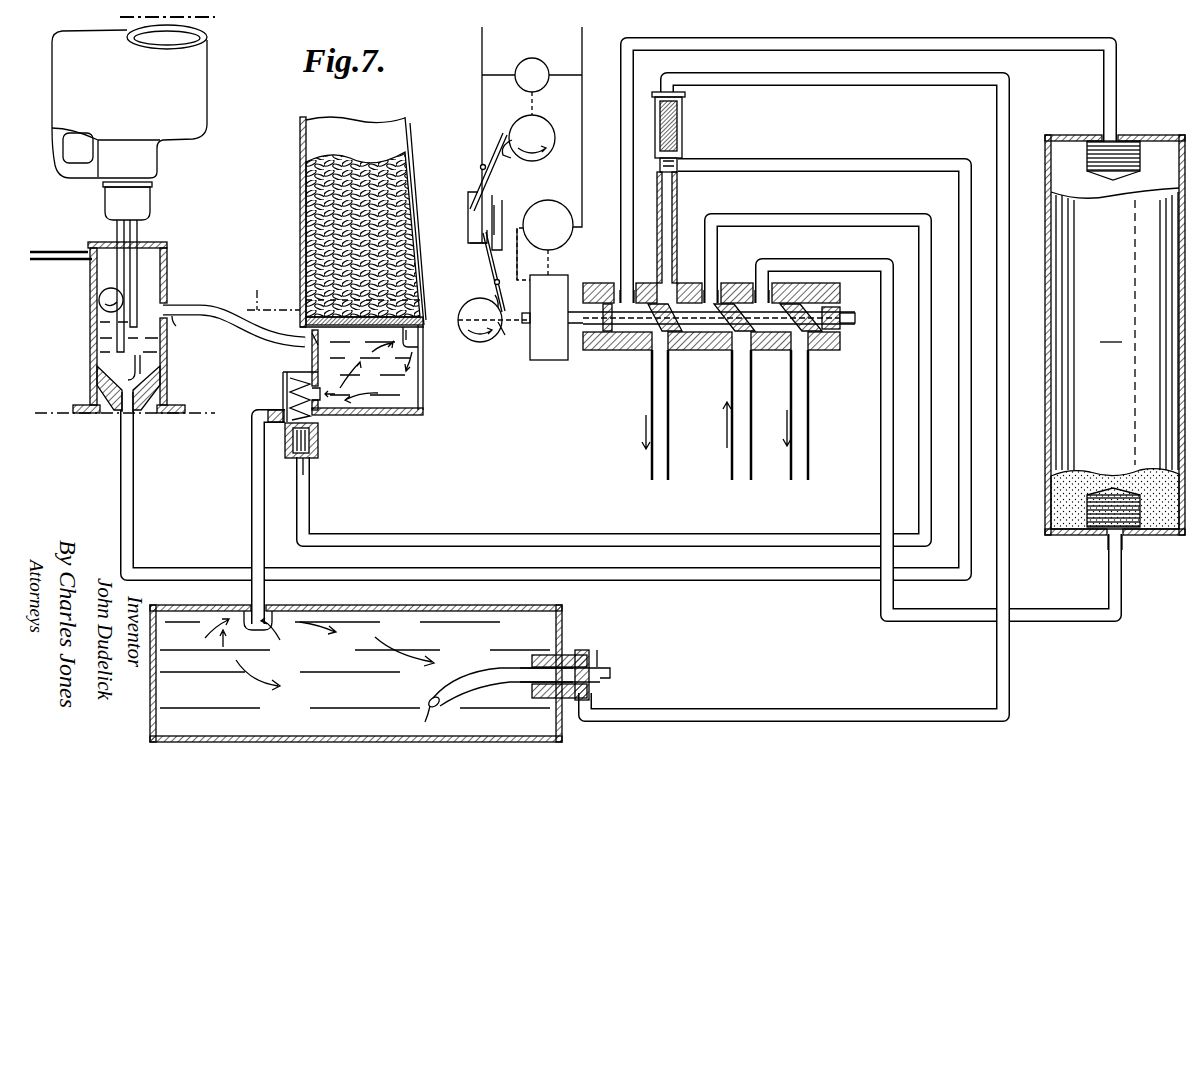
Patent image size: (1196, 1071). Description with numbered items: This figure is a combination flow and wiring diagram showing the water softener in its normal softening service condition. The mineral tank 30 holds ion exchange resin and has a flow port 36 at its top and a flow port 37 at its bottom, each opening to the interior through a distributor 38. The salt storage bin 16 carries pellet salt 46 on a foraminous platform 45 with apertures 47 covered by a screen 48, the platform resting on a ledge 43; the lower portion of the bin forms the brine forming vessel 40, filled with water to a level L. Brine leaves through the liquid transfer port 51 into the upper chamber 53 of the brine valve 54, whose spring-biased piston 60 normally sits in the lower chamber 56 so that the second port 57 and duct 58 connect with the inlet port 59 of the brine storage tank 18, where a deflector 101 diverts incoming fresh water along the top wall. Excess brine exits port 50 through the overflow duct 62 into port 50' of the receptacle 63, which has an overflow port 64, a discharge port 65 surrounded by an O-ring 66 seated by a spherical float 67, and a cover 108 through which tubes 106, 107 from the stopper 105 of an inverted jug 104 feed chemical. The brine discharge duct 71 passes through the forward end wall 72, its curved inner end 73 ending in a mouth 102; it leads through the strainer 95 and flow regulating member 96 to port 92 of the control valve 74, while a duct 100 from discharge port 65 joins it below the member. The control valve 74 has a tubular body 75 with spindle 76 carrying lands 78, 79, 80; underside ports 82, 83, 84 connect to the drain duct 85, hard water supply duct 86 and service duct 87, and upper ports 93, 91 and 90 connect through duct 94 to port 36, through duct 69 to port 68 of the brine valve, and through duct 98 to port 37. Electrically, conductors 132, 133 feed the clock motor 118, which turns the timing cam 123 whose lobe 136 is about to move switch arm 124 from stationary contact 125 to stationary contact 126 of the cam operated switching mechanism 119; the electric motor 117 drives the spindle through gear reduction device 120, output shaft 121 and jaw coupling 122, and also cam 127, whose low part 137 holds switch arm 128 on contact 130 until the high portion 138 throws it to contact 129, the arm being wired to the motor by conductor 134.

The jug 104 is at (192, 94).
The two-hole stopper 105 is at (140, 206).
The cover 108 is at (152, 240).
The tube 107 is at (138, 262).
The tube 106 is at (118, 272).
The overflow port 64 is at (88, 251).
The receptacle 63 is at (92, 286).
The spherical float 67 is at (102, 308).
The overflow duct 62 is at (192, 302).
The port 50' is at (188, 325).
The O-ring 66 is at (140, 362).
The discharge port 65 is at (120, 416).
The salt storage bin 16 is at (298, 148).
The salt 46 is at (356, 152).
The screen 48 is at (318, 297).
The ledge 43 is at (312, 323).
The level L is at (271, 290).
The brine forming vessel 40 is at (416, 392).
The foraminous platform 45 is at (410, 340).
The apertures 47 is at (412, 348).
The port 50 is at (298, 346).
The brine valve 54 is at (283, 378).
The upper chamber 53 is at (290, 388).
The second port 57 is at (270, 412).
The liquid transfer port 51 is at (318, 402).
The lower chamber 56 is at (310, 440).
The piston 60 is at (316, 453).
The port 68 is at (305, 473).
The duct 58 is at (252, 478).
The inlet port 59 is at (266, 600).
The deflector 101 is at (246, 612).
The brine storage tank 18 is at (320, 742).
The forward end wall 72 is at (565, 650).
The curved inner end 73 is at (468, 690).
The mouth 102 is at (430, 712).
The brine discharge duct 71 is at (797, 708).
The duct 69 is at (548, 532).
The duct 100 is at (792, 581).
The duct 98 is at (879, 438).
The duct 94 is at (1040, 50).
The conductor 132 is at (480, 60).
The conductor 133 is at (582, 52).
The clock motor 118 is at (546, 62).
The cam 123 is at (542, 122).
The switch arm 124 is at (504, 130).
The lobe 136 is at (506, 152).
The stationary contact 125 is at (470, 190).
The stationary contact 126 is at (494, 196).
The stationary contact 130 is at (495, 215).
The cam operated switching mechanism 119 is at (451, 204).
The electric motor 117 is at (566, 192).
The stationary contact 129 is at (470, 245).
The switch arm 128 is at (490, 275).
The conductor 134 is at (521, 240).
The low part 137 is at (492, 300).
The cam 127 is at (468, 340).
The high portion 138 is at (502, 336).
The output shaft 121 is at (524, 326).
The gear reduction device 120 is at (548, 362).
The jaw coupling 122 is at (574, 330).
The control valve 74 is at (606, 393).
The spindle 76 is at (612, 292).
The port 93 is at (624, 280).
The port 92 is at (664, 278).
The port 91 is at (710, 280).
The port 90 is at (768, 280).
The land 79 is at (746, 300).
The land 80 is at (818, 292).
The land 78 is at (655, 340).
The tubular body 75 is at (840, 295).
The port 84 is at (670, 342).
The port 83 is at (750, 342).
The port 82 is at (808, 342).
The service duct 87 is at (652, 463).
The hard water supply duct 86 is at (732, 478).
The drain duct 85 is at (796, 478).
The strainer 95 is at (684, 108).
The flow regulating member 96 is at (680, 144).
The mineral tank 30 is at (1115, 335).
The flow port 36 is at (1104, 138).
The distributor 38 is at (1138, 160).
The flow port 37 is at (1109, 540).